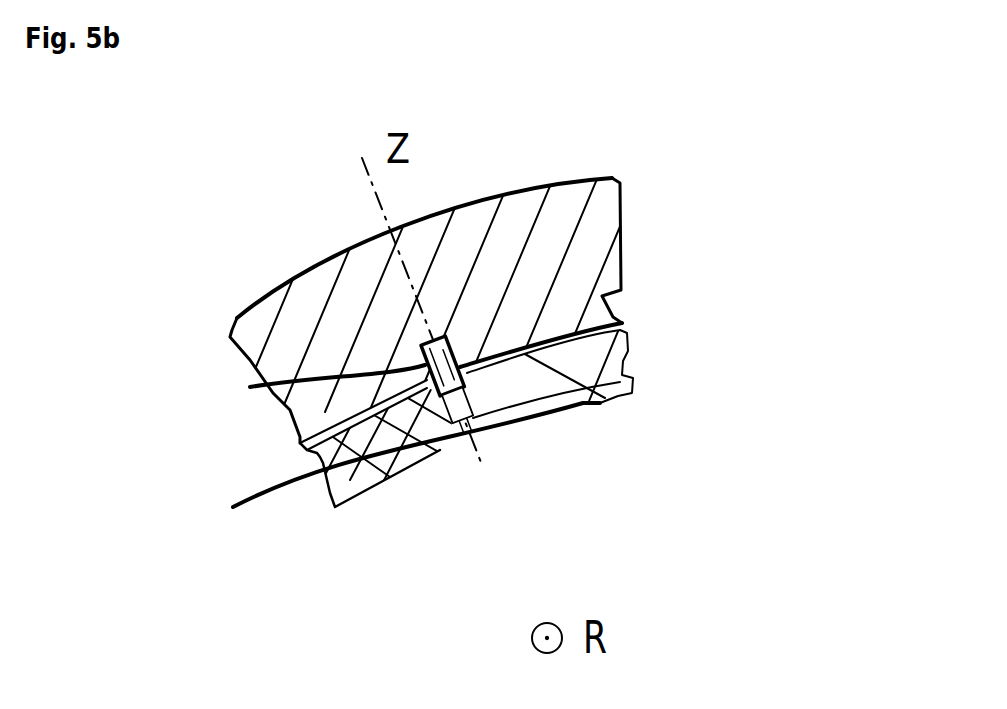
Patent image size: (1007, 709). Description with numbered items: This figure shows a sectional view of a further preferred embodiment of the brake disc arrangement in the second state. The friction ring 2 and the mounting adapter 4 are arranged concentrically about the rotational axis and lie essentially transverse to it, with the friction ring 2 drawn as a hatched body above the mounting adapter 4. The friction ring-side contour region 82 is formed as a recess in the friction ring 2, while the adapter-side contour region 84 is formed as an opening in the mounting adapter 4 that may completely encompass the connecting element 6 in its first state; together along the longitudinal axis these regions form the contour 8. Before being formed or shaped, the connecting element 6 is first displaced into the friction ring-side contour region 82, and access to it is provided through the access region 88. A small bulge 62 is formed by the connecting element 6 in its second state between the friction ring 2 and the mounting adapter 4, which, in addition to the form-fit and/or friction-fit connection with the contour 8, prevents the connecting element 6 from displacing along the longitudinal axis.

The friction ring 2 is at (607, 208).
The mounting adapter 4 is at (613, 377).
The connecting element 6 is at (435, 390).
The contour 8 is at (481, 380).
The bulge 62 is at (396, 469).
The friction ring-side contour region 82 is at (250, 387).
The adapter-side contour region 84 is at (475, 399).
The access region 88 is at (470, 443).